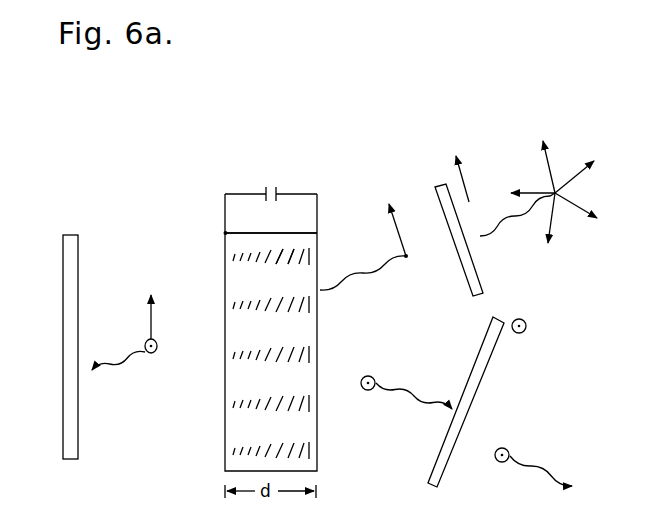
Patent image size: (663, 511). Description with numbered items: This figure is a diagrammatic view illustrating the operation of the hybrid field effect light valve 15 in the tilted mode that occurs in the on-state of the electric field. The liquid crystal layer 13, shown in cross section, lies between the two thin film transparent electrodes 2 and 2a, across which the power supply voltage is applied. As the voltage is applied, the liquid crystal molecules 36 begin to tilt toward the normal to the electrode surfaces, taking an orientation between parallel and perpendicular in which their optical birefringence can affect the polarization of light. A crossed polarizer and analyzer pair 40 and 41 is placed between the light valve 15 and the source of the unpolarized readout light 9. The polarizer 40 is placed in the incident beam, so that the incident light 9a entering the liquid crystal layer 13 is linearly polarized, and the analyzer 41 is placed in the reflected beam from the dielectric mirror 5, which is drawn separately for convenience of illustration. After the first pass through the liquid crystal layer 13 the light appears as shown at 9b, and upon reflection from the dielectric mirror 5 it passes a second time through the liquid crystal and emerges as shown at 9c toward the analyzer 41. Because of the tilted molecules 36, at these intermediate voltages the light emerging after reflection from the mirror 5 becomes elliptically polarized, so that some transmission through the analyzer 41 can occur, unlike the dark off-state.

The AC light valve 15 is at (334, 174).
The transparent electrode 2 is at (318, 258).
The transparent electrode 2a is at (225, 256).
The liquid crystal layer 13 is at (281, 341).
The liquid crystal molecules 36 is at (284, 262).
The dielectric mirror 5 is at (67, 258).
The readout light beam 9 is at (530, 218).
The linearly polarized incident light 9a is at (381, 270).
The light after first pass 9b is at (124, 351).
The light after second pass 9c is at (407, 398).
The polarizer 40 is at (483, 284).
The analyzer 41 is at (479, 396).